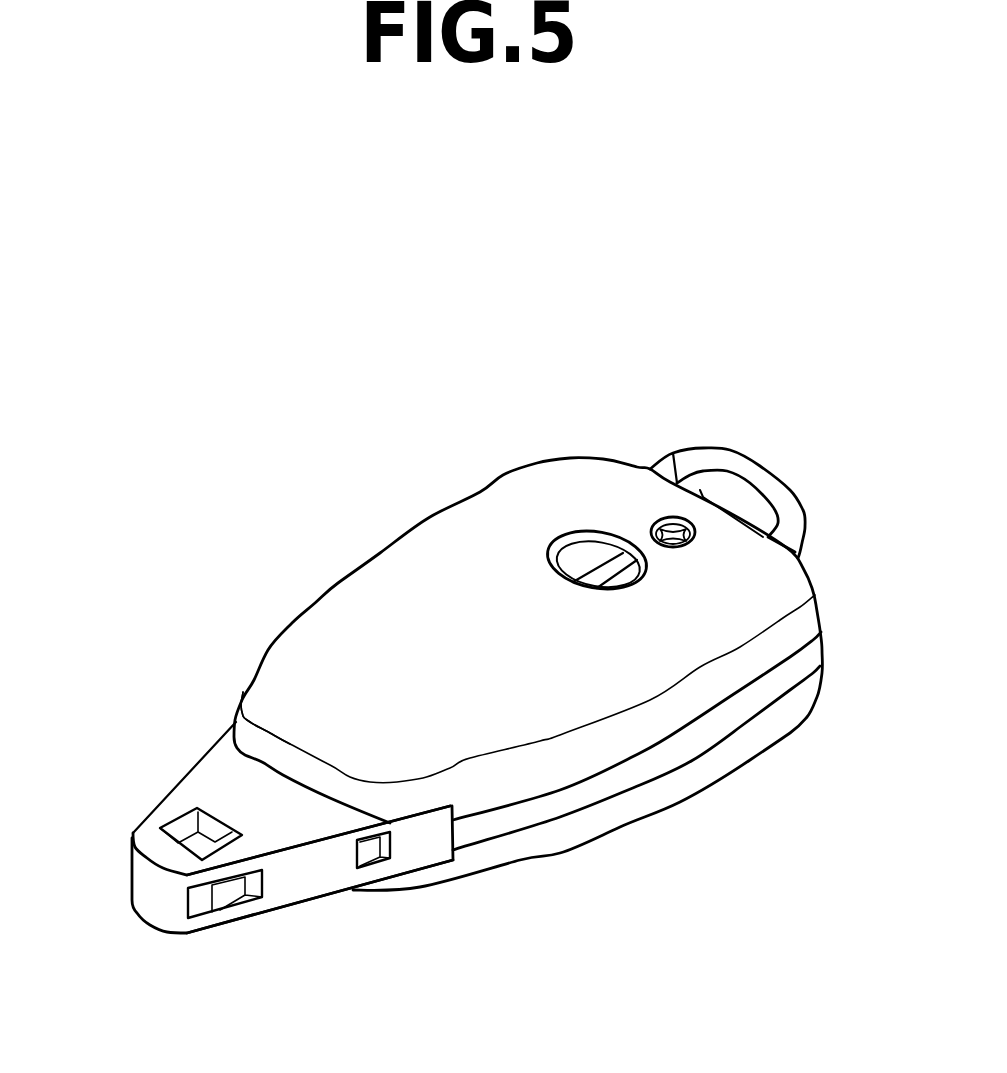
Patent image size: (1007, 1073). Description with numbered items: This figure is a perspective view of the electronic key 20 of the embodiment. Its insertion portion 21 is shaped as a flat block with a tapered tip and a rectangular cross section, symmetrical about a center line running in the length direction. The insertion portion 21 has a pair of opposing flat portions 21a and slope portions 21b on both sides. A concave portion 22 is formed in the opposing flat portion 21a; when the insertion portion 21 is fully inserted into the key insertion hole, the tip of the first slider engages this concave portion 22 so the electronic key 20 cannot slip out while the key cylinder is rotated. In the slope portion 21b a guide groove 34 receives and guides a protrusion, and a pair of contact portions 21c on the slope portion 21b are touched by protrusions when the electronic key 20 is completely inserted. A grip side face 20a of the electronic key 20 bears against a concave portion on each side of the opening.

The electronic key 20 is at (381, 540).
The grip side face 20a is at (268, 737).
The insertion portion 21 is at (260, 860).
The opposing flat portion 21a is at (208, 787).
The slope portion 21b is at (323, 870).
The contact portion 21c is at (377, 860).
The concave portion 22 is at (183, 837).
The guide groove 34 is at (220, 897).